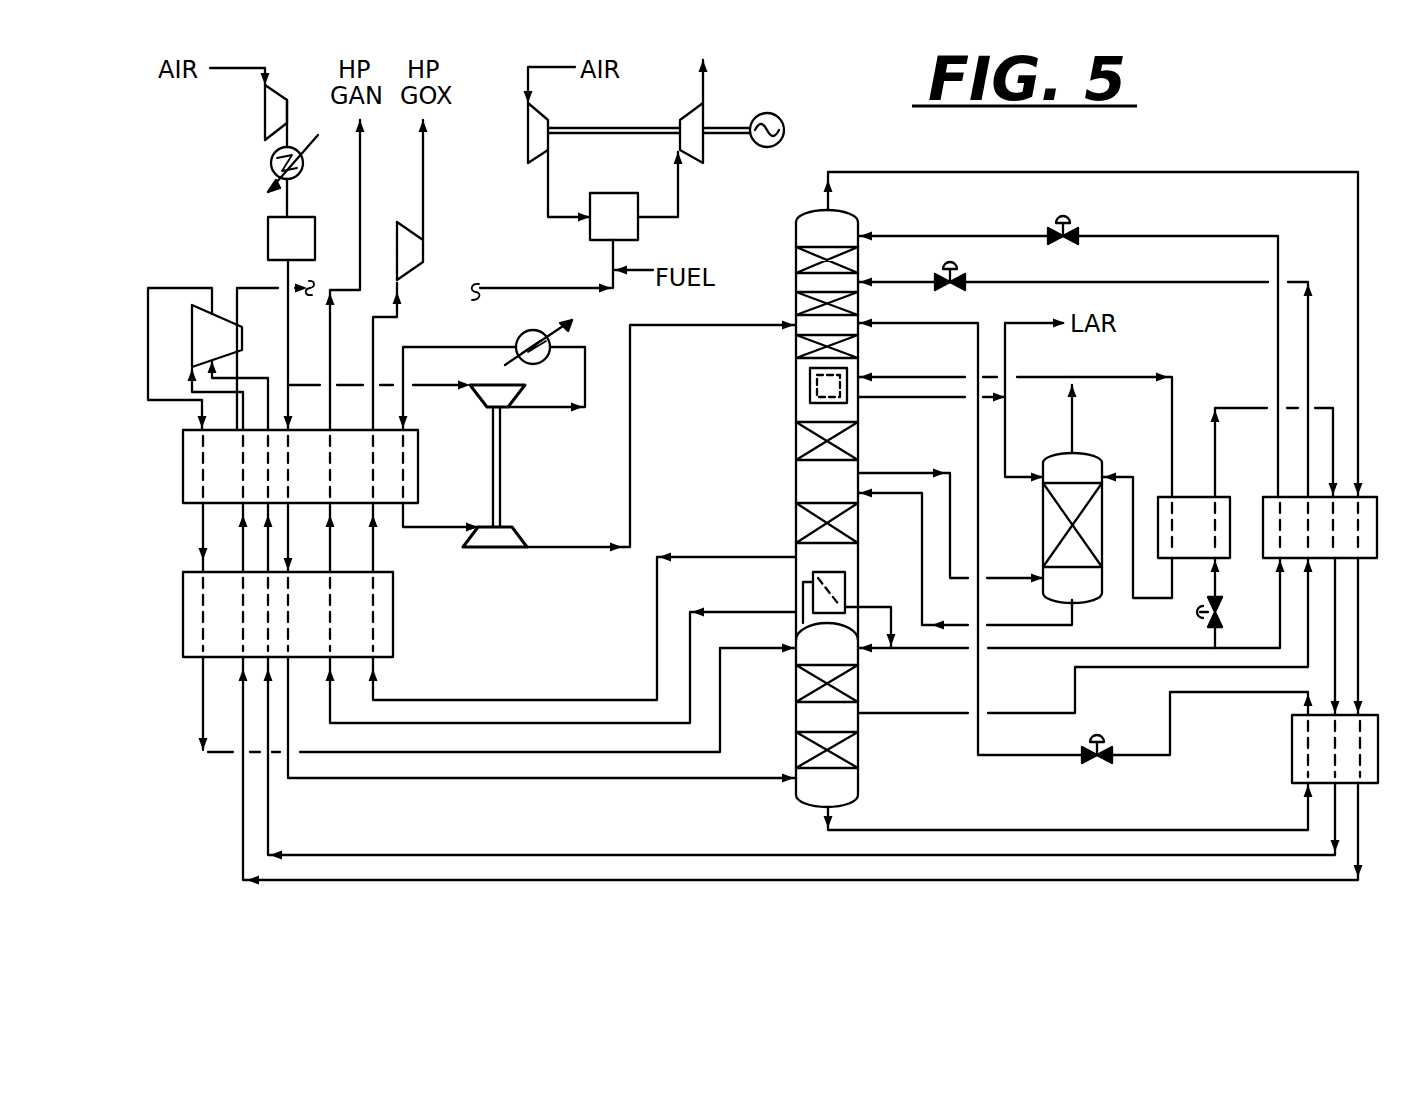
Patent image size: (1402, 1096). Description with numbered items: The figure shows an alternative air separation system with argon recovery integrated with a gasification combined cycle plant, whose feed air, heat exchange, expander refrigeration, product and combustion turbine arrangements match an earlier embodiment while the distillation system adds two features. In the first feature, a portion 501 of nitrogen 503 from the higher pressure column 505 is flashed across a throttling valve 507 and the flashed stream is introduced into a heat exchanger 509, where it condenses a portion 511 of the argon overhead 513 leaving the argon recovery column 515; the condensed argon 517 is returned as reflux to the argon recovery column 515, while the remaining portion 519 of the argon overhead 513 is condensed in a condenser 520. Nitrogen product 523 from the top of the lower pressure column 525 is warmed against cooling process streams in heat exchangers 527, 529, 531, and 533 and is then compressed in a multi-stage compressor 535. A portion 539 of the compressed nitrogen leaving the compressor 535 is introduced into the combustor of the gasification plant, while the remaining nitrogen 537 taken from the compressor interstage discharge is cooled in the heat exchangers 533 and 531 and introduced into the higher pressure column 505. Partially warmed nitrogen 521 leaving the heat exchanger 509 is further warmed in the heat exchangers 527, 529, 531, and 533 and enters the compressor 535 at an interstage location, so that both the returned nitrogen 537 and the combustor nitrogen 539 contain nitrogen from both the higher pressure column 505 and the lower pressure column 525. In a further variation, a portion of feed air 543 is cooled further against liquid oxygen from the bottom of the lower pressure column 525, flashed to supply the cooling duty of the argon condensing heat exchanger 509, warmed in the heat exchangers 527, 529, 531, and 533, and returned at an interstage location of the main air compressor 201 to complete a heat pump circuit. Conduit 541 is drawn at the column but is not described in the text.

The main air compressor 201 is at (265, 118).
The portion of nitrogen 501 is at (1213, 637).
The nitrogen 503 is at (1020, 648).
The higher pressure column 505 is at (858, 790).
The throttling valve 507 is at (1223, 618).
The heat exchanger 509 is at (1233, 508).
The portion of argon overhead 511 is at (1117, 372).
The argon overhead 513 is at (1068, 437).
The argon recovery column 515 is at (1043, 525).
The condensed argon 517 is at (1122, 470).
The remaining portion of argon overhead vapor 519 is at (1068, 377).
The condenser 520 is at (808, 400).
The partially warmed nitrogen 521 is at (1232, 407).
The nitrogen product 523 is at (993, 172).
The lower pressure column 525 is at (796, 373).
The heat exchanger 527 is at (1263, 537).
The heat exchanger 529 is at (1292, 762).
The heat exchanger 531 is at (393, 617).
The heat exchanger 533 is at (418, 458).
The multi-stage compressor 535 is at (192, 340).
The remaining nitrogen 537 is at (205, 288).
The portion of compressed nitrogen 539 is at (510, 288).
The conduit 541 is at (750, 650).
The portion of feed air 543 is at (683, 785).